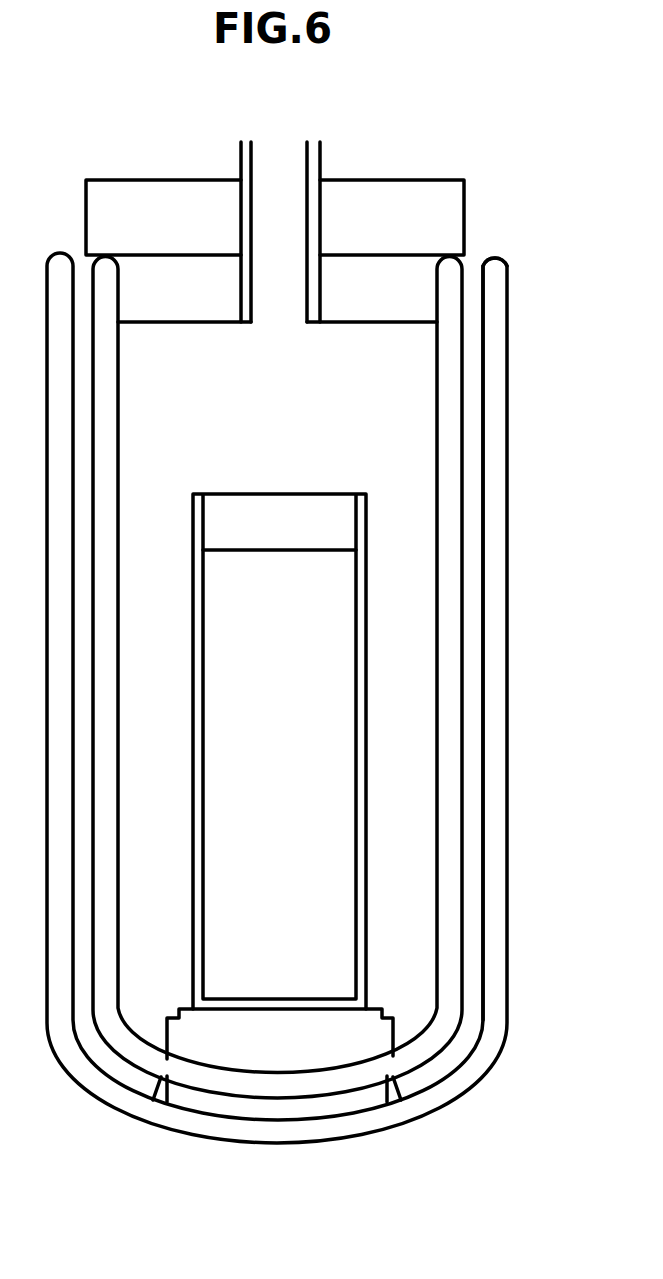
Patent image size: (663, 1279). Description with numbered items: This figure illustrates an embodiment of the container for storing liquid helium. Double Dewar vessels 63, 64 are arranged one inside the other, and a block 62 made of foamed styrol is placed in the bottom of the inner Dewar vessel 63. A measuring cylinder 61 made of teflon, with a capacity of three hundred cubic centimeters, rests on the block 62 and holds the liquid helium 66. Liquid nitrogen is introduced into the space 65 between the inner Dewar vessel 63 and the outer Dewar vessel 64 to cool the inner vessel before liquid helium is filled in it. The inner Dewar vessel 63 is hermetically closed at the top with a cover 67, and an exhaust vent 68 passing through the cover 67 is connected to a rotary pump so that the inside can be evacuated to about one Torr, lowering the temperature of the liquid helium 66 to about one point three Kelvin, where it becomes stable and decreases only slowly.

The measuring cylinder 61 is at (366, 601).
The block 62 is at (385, 1050).
The inner Dewar vessel 63 is at (450, 740).
The outer Dewar vessel 64 is at (498, 783).
The space 65 is at (472, 874).
The liquid helium 66 is at (334, 740).
The top plate 67 is at (407, 275).
The exhaust vent 68 is at (286, 175).